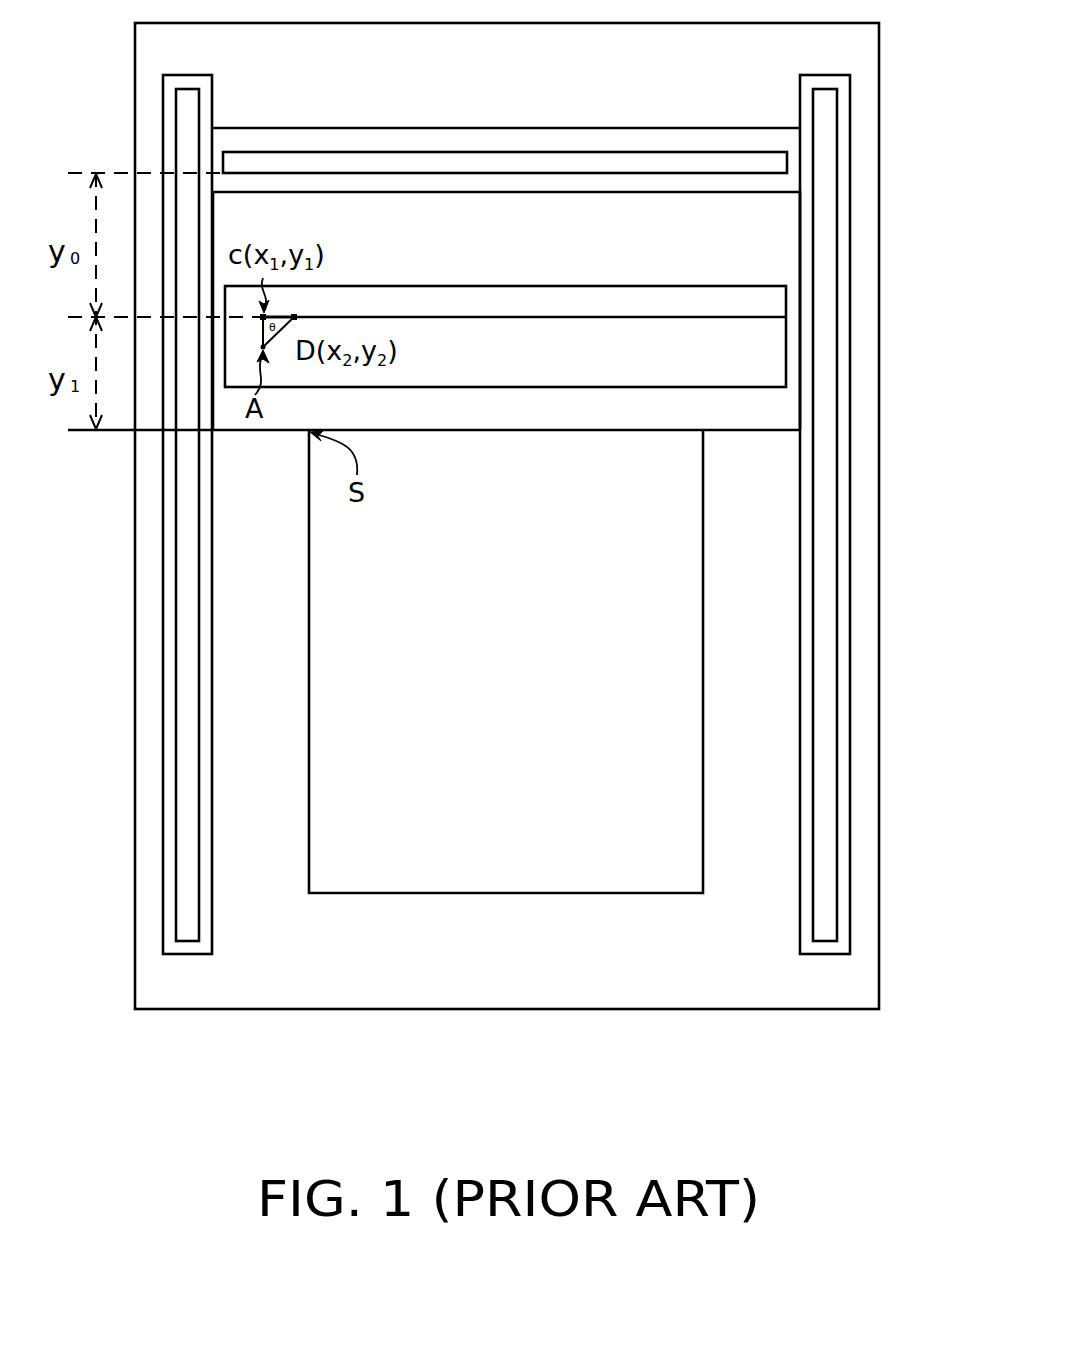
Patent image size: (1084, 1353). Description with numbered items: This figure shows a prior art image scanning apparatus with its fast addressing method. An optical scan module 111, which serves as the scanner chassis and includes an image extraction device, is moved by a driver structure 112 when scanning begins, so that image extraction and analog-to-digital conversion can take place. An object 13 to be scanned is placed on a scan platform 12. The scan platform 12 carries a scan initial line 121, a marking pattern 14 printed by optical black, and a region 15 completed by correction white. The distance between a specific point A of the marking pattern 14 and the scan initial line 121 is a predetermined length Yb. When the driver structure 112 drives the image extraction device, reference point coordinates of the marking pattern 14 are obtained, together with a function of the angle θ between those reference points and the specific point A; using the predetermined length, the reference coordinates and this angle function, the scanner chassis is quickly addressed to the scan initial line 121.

The scan platform 12 is at (261, 958).
The object to be scanned 13 is at (673, 600).
The marking pattern 14 is at (294, 314).
The region completed by correction white 15 is at (488, 373).
The optical scan module 111 is at (782, 158).
The driver structure 112 is at (187, 670).
The scan initial line 121 is at (733, 431).